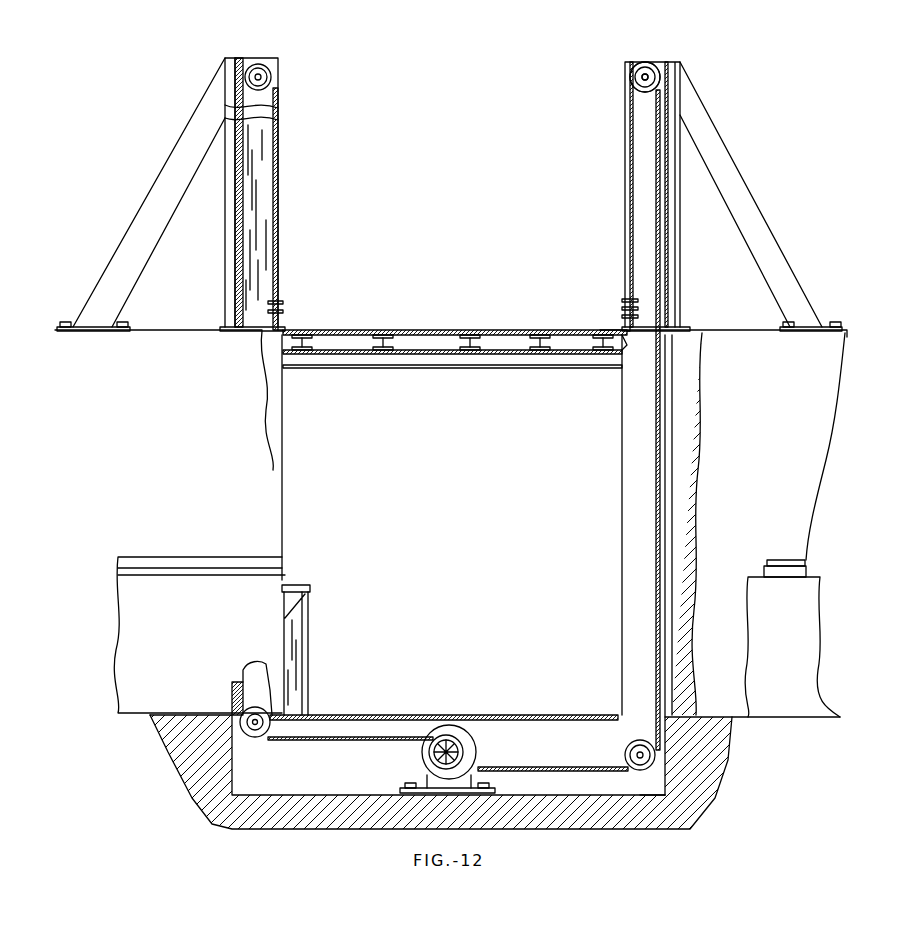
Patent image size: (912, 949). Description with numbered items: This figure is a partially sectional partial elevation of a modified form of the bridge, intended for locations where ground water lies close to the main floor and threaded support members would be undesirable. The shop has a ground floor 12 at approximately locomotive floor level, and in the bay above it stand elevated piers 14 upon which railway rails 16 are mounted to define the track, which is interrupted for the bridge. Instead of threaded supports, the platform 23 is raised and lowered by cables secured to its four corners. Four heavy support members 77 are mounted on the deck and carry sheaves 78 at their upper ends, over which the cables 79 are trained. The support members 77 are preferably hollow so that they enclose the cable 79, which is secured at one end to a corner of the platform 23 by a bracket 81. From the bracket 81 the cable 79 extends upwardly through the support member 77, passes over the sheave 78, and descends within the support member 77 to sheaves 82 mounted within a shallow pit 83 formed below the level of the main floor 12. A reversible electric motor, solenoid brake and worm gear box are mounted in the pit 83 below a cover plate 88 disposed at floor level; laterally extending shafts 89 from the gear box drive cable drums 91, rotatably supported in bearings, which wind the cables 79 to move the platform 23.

The ground floor 12 is at (728, 717).
The elevated piers 14 is at (787, 656).
The railway rails 16 is at (772, 565).
The platform 23 is at (503, 353).
The support members 77 is at (257, 138).
The sheaves 78 is at (642, 76).
The cables 79 is at (273, 297).
The bracket 81 is at (624, 347).
The sheaves 82 is at (628, 752).
The shallow pit 83 is at (645, 787).
The cover plate 88 is at (546, 716).
The shafts 89 is at (437, 752).
The cable drums 91 is at (450, 740).